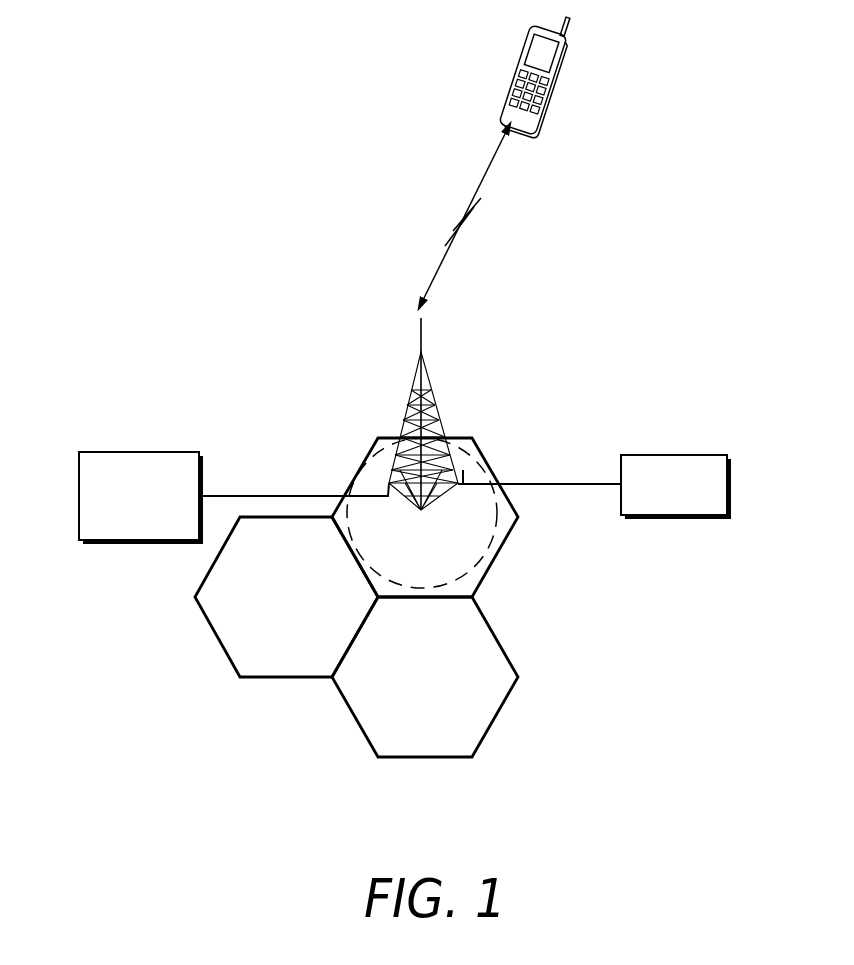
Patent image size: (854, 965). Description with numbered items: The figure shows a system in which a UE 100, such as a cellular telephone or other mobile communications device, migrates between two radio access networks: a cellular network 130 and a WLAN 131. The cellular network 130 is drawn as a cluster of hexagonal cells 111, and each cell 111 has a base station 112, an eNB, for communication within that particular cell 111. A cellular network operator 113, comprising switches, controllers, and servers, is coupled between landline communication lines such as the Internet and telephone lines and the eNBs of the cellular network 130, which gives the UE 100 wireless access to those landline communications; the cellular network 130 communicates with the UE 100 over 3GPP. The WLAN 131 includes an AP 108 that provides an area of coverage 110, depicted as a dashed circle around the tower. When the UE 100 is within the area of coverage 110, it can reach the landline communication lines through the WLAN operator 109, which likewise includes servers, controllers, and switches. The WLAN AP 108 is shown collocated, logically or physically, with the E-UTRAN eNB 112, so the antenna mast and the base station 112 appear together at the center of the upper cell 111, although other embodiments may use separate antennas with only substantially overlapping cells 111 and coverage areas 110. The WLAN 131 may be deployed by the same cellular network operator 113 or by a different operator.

The UE 100 is at (514, 60).
The AP 108 is at (420, 332).
The base station 112 is at (430, 392).
The cell 111 is at (370, 454).
The area of coverage 110 is at (488, 548).
The cellular network operator 113 is at (152, 452).
The WLAN operator 109 is at (678, 516).
The cellular network 130 is at (168, 582).
The WLAN 131 is at (592, 446).